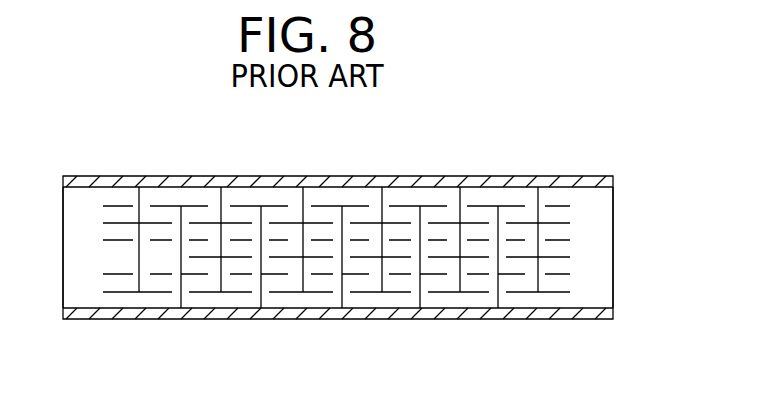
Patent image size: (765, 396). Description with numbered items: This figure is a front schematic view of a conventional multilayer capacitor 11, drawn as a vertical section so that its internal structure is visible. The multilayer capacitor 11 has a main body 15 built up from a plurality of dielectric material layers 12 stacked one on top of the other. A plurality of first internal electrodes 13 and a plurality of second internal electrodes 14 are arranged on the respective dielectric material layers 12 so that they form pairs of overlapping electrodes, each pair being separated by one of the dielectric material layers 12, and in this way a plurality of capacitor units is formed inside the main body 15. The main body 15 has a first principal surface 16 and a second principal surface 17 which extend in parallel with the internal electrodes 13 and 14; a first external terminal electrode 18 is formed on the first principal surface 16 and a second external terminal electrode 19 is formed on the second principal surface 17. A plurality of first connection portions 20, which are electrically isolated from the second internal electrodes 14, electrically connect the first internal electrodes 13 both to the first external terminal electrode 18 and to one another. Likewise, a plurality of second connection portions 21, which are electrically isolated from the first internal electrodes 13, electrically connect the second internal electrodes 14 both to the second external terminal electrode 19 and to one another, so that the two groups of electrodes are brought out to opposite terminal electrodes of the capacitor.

The multilayer capacitor 11 is at (87, 124).
The dielectric material layers 12 is at (325, 233).
The first internal electrodes 13 is at (245, 278).
The second internal electrodes 14 is at (440, 238).
The main body 15 is at (622, 200).
The first principal surface 16 is at (79, 187).
The second principal surface 17 is at (88, 308).
The first external terminal electrode 18 is at (247, 177).
The second external terminal electrode 19 is at (283, 318).
The first connection portions 20 is at (221, 193).
The second connection portions 21 is at (420, 298).